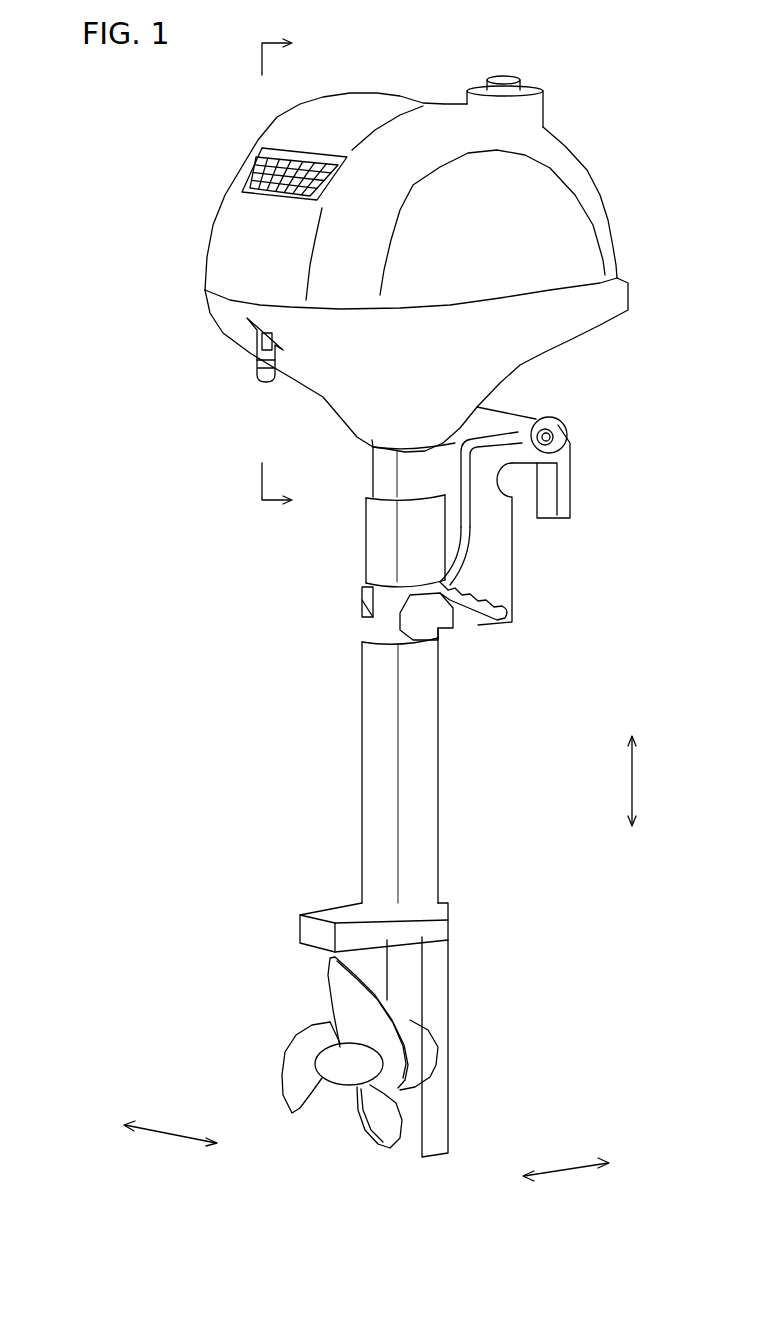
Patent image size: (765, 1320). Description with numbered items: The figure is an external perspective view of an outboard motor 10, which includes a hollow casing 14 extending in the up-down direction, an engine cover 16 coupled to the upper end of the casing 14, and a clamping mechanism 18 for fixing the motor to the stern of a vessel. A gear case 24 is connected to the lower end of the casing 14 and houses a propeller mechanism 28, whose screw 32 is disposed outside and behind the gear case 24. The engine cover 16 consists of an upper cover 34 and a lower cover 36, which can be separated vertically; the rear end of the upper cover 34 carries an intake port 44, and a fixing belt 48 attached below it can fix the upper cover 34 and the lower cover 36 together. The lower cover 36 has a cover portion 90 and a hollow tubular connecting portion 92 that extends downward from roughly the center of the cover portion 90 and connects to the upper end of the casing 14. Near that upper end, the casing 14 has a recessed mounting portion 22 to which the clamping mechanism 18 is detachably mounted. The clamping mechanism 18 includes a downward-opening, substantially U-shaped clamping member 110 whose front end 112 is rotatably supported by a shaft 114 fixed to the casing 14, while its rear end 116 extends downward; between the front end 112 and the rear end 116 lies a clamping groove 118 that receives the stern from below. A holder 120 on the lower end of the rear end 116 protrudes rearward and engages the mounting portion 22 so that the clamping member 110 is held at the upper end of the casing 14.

The outboard motor 10 is at (140, 110).
The casing 14 is at (445, 725).
The engine cover 16 is at (204, 226).
The clamping mechanism 18 is at (518, 578).
The mounting portion 22 is at (388, 627).
The gear case 24 is at (437, 970).
The propeller mechanism 28 is at (356, 1138).
The screw 32 is at (303, 1053).
The upper cover 34 is at (553, 157).
The lower cover 36 is at (566, 349).
The intake port 44 is at (250, 178).
The fixing belt 48 is at (246, 385).
The cover portion 90 is at (333, 390).
The connecting portion 92 is at (387, 470).
The clamping member 110 is at (580, 477).
The front end 112 is at (563, 500).
The shaft 114 is at (570, 432).
The rear end 116 is at (497, 453).
The clamping groove 118 is at (510, 530).
The holder 120 is at (443, 617).